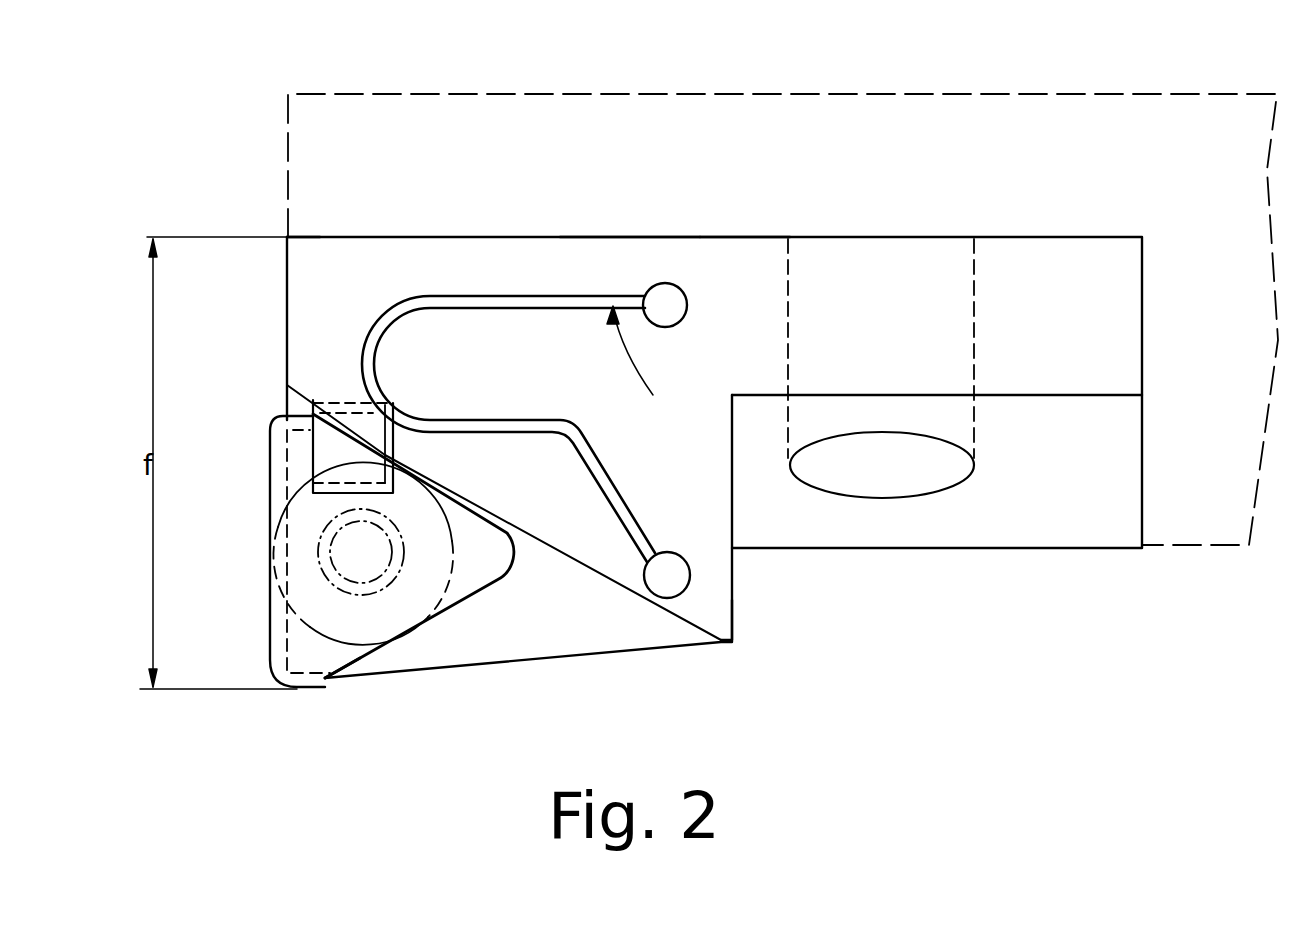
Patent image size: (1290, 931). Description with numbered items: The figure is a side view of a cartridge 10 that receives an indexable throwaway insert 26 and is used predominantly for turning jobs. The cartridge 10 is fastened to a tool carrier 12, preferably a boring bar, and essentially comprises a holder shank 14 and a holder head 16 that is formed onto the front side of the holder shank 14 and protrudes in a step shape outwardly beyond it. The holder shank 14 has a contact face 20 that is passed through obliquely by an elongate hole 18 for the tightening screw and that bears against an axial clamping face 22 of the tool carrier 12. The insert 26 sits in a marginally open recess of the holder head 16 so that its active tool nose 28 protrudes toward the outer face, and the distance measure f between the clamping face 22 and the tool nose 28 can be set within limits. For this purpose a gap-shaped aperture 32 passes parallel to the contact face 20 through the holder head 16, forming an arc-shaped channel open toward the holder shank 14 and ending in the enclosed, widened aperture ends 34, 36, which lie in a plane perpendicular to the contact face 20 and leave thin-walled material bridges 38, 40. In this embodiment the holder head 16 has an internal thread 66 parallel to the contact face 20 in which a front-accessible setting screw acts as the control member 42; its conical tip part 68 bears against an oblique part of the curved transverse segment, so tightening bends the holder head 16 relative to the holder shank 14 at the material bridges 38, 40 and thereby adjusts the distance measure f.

The cartridge 10 is at (479, 236).
The tool carrier 12 is at (855, 150).
The holder shank 14 is at (1077, 295).
The holder head 16 is at (613, 253).
The elongate hole 18 is at (935, 473).
The contact face 20 is at (1023, 237).
The clamping face 22 is at (312, 239).
The indexable throwaway insert 26 is at (478, 566).
The tool nose 28 is at (324, 680).
The gap-shaped aperture 32 is at (653, 370).
The aperture end 34 is at (673, 303).
The aperture end 36 is at (670, 572).
The material bridge 38 is at (737, 263).
The material bridge 40 is at (712, 617).
The control member (setting screw) 42 is at (350, 400).
The internal thread 66 is at (283, 417).
The conical tip part 68 is at (395, 407).